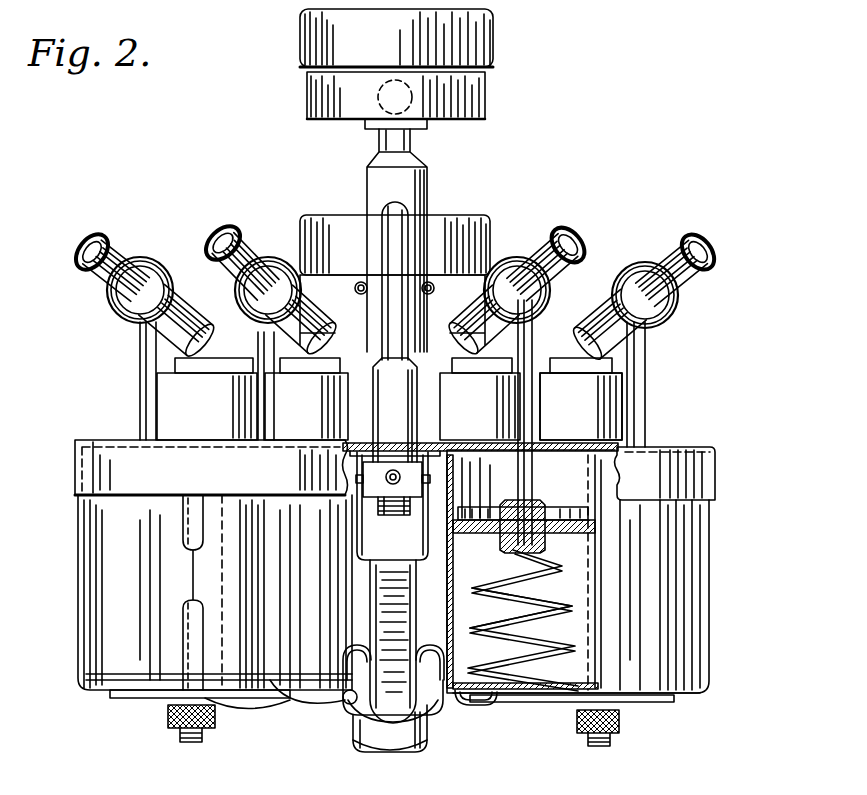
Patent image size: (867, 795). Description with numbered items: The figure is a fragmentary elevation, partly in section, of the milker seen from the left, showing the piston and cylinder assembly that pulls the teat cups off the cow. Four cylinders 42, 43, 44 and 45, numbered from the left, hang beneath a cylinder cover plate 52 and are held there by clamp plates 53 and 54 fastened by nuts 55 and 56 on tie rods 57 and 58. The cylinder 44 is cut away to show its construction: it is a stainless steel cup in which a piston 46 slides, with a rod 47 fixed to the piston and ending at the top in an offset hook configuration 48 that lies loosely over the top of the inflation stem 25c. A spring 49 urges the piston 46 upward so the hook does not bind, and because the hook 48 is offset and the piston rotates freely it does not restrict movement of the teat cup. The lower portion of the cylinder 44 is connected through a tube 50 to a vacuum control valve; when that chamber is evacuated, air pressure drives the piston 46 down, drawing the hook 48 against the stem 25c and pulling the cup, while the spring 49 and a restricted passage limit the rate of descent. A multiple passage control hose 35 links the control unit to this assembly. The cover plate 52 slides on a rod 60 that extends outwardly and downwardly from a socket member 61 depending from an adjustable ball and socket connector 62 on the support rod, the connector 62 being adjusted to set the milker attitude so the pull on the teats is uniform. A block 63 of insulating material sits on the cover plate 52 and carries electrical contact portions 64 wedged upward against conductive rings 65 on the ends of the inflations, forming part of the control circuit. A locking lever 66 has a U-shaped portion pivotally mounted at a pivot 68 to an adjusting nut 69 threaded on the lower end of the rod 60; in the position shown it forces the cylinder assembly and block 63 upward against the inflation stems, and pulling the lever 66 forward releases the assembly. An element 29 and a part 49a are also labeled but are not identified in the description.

The adjustable ball and socket connector 62 is at (493, 84).
The socket member 61 is at (428, 182).
The rod 60 is at (410, 228).
The head block 29 is at (482, 221).
The inflation stem 25c is at (118, 258).
The offset hook configuration 48 is at (140, 266).
The conductive rings 65 is at (218, 312).
The piston rod 47 is at (138, 360).
The electrical contact portions 64 is at (232, 358).
The block of insulating material 63 is at (628, 392).
The cylinder cover plate 52 is at (108, 458).
The cylinder 42 is at (92, 634).
The tie rod 57 is at (203, 620).
The clamp plate 53 is at (143, 698).
The nut 55 is at (168, 729).
The cylinder 43 is at (290, 713).
The cylinder 45 is at (690, 673).
The tie rod 58 is at (603, 652).
The piston 46 is at (555, 521).
The spring 49 is at (533, 590).
The spring coil 49a is at (521, 608).
The pivot 68 is at (425, 462).
The adjusting nut 69 is at (402, 470).
The locking lever 66 is at (360, 506).
The cylinder 44 is at (441, 712).
The multiple passage control hose 35 is at (368, 750).
The tube 50 is at (470, 706).
The clamp plate 54 is at (662, 703).
The nut 56 is at (590, 746).